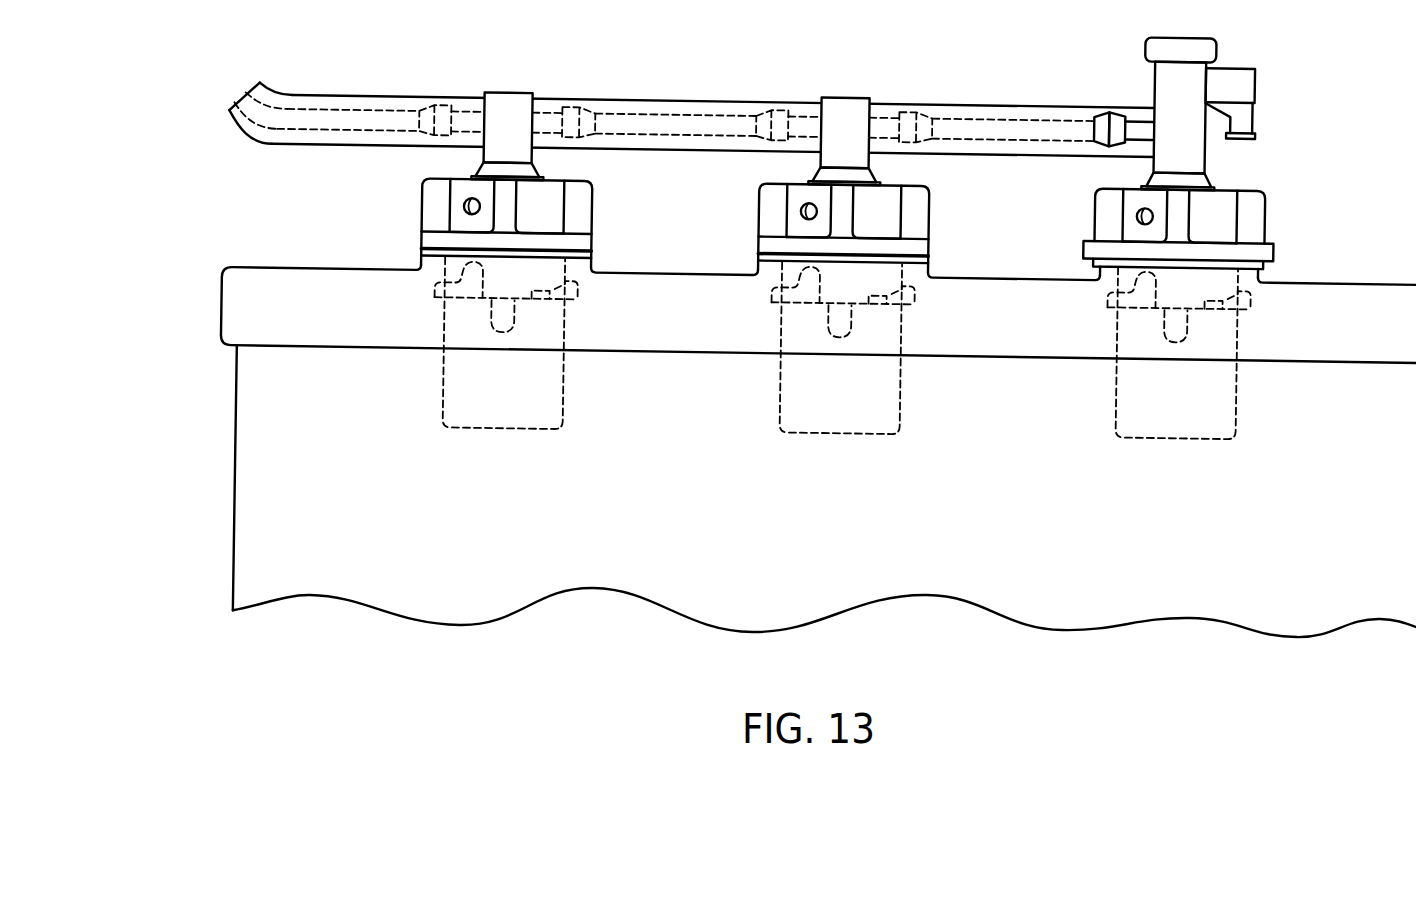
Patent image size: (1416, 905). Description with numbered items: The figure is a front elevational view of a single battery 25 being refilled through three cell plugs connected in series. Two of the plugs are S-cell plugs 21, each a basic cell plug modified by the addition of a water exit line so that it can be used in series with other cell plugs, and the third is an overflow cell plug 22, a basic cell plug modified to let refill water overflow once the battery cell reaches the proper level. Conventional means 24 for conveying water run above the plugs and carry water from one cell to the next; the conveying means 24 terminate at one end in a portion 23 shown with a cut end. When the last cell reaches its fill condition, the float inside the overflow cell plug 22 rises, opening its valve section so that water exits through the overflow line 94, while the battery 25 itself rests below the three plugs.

The S-cell plug 21 is at (592, 206).
The overflow cell plug 22 is at (1266, 222).
The manifold conduit end 23 is at (238, 89).
The conventional means for conveying water 24 is at (683, 101).
The battery 25 is at (236, 508).
The overflow line 94 is at (1253, 83).